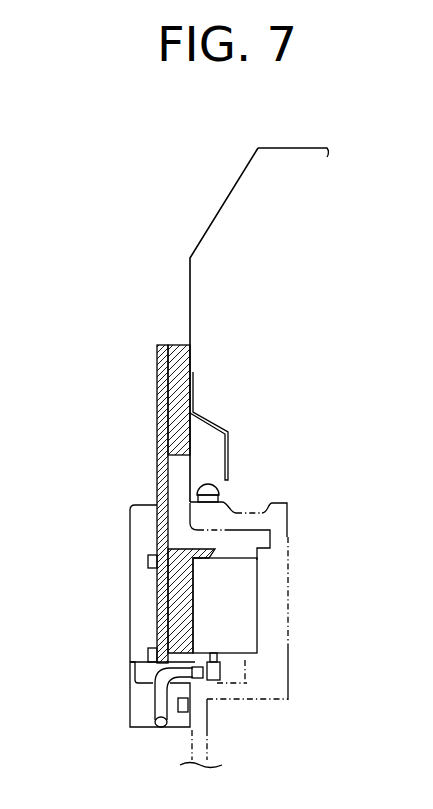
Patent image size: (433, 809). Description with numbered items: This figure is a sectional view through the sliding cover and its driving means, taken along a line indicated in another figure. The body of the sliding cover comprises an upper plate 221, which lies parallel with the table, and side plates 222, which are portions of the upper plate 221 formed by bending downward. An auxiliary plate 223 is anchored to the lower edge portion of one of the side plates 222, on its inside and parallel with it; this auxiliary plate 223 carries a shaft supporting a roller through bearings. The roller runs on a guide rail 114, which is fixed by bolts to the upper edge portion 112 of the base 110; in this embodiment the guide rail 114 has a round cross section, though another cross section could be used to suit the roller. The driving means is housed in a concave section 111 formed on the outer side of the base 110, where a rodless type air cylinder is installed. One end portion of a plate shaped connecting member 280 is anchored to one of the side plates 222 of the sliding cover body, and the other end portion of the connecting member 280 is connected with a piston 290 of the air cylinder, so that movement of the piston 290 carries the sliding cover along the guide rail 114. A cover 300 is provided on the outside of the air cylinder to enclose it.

The upper plate 221 is at (290, 147).
The side plates 222 is at (188, 287).
The auxiliary plate 223 is at (230, 440).
The connecting member 280 is at (160, 413).
The piston 290 is at (177, 623).
The cover 300 is at (135, 570).
The base 110 is at (277, 687).
The concave section 111 is at (230, 673).
The upper edge portion 112 is at (280, 498).
The guide rail 114 is at (220, 493).